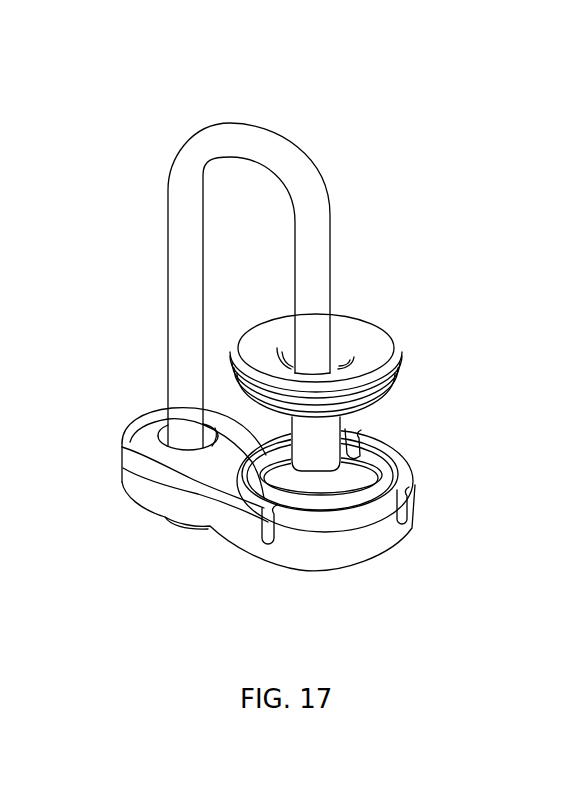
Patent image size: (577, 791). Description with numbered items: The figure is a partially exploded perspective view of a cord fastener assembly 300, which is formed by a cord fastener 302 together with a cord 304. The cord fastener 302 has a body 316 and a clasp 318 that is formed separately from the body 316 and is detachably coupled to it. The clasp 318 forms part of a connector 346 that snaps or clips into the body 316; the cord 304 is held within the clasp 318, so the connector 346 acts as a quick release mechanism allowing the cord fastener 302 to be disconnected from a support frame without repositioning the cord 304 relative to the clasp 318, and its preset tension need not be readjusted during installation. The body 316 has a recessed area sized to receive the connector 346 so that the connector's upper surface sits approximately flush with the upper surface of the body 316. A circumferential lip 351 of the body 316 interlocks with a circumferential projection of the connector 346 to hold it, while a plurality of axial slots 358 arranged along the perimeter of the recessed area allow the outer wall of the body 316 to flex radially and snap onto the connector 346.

The cord fastener assembly 300 is at (203, 113).
The cord 304 is at (283, 160).
The connector 346 is at (343, 314).
The clasp 318 is at (346, 357).
The cord fastener 302 is at (140, 491).
The body 316 is at (200, 505).
The circumferential lip 351 is at (383, 446).
The axial slots 358 is at (406, 509).